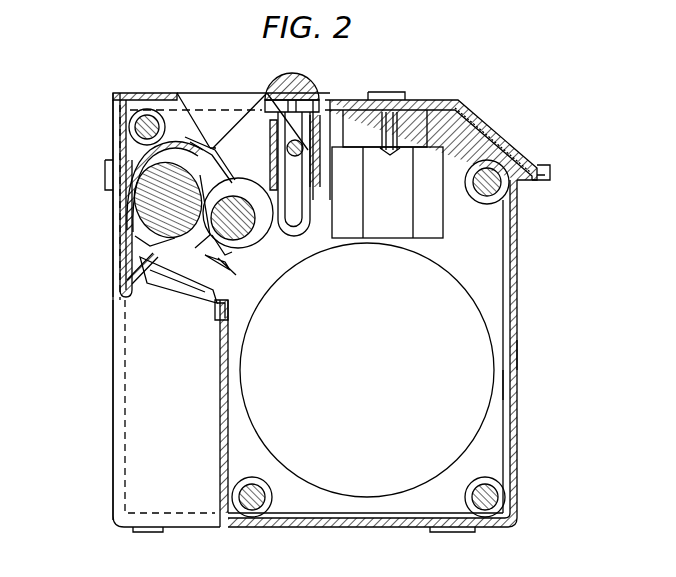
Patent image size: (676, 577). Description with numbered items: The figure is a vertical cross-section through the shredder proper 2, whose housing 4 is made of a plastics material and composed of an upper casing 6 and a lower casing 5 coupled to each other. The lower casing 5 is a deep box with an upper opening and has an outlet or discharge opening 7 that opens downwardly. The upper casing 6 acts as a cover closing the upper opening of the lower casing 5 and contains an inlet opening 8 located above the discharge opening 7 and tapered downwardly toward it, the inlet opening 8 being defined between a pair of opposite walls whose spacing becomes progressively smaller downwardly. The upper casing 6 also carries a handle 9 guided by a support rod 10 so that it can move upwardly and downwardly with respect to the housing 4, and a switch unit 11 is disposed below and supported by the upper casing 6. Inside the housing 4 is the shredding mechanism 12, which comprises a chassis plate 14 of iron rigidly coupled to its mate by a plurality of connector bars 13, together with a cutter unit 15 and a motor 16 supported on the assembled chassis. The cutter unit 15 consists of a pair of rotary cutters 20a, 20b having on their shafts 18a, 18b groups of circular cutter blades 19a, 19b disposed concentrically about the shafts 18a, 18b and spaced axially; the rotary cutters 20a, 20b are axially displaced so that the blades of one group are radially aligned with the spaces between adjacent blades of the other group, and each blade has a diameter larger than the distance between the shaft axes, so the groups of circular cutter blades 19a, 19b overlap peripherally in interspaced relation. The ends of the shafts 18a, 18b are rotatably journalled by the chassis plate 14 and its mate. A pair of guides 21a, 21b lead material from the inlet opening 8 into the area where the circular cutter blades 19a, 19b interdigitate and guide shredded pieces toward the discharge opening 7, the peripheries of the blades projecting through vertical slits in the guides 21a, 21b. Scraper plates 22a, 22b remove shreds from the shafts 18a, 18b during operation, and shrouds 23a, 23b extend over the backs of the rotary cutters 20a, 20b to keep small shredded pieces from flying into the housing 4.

The shredder proper 2 is at (445, 88).
The housing 4 is at (550, 170).
The lower casing 5 is at (517, 353).
The upper casing 6 is at (353, 100).
The discharge opening 7 is at (153, 313).
The inlet opening 8 is at (215, 115).
The handle 9 is at (305, 90).
The support rod 10 is at (293, 141).
The switch unit 11 is at (440, 150).
The shredding mechanism 12 is at (240, 320).
The connector bars 13 is at (497, 497).
The chassis plate 14 is at (507, 385).
The cutter unit 15 is at (150, 237).
The motor 16 is at (478, 330).
The shaft 18a is at (130, 210).
The shaft 18b is at (252, 228).
The circular cutter blades 19a is at (137, 218).
The circular cutter blades 19b is at (248, 238).
The rotary cutter 20a is at (137, 185).
The rotary cutter 20b is at (262, 212).
The guide 21a is at (182, 142).
The guide 21b is at (248, 176).
The scraper plate 22a is at (147, 247).
The scraper plate 22b is at (232, 262).
The shroud 23a is at (131, 157).
The shroud 23b is at (265, 238).